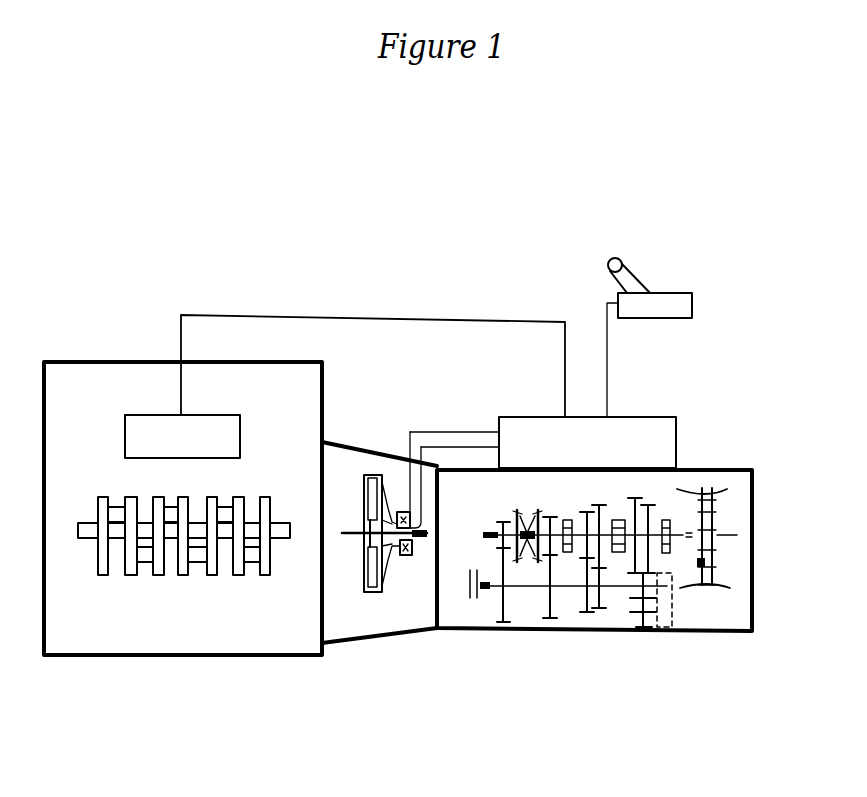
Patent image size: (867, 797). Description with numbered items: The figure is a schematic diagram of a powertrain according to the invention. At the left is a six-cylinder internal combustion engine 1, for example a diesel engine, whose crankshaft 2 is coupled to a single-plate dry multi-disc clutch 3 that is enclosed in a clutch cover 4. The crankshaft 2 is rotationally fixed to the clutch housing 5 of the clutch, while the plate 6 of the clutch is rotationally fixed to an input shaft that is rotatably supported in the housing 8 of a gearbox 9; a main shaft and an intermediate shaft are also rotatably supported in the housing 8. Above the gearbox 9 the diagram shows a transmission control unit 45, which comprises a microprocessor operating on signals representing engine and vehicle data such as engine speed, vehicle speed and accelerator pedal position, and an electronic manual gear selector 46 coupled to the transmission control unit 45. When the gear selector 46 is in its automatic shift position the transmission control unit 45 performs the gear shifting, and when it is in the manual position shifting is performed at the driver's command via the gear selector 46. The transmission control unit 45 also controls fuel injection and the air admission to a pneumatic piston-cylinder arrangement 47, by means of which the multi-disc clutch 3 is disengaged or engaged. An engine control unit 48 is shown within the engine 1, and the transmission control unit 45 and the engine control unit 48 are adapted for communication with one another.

The internal combustion engine 1 is at (106, 354).
The crankshaft 2 is at (165, 576).
The multi-disc clutch 3 is at (380, 508).
The clutch cover 4 is at (339, 441).
The clutch housing 5 is at (363, 497).
The plate 6 is at (371, 576).
The housing 8 is at (503, 632).
The gearbox 9 is at (600, 555).
The transmission control unit 45 is at (650, 417).
The gear selector 46 is at (684, 293).
The pneumatic piston-cylinder arrangement 47 is at (415, 552).
The engine control unit 48 is at (211, 415).